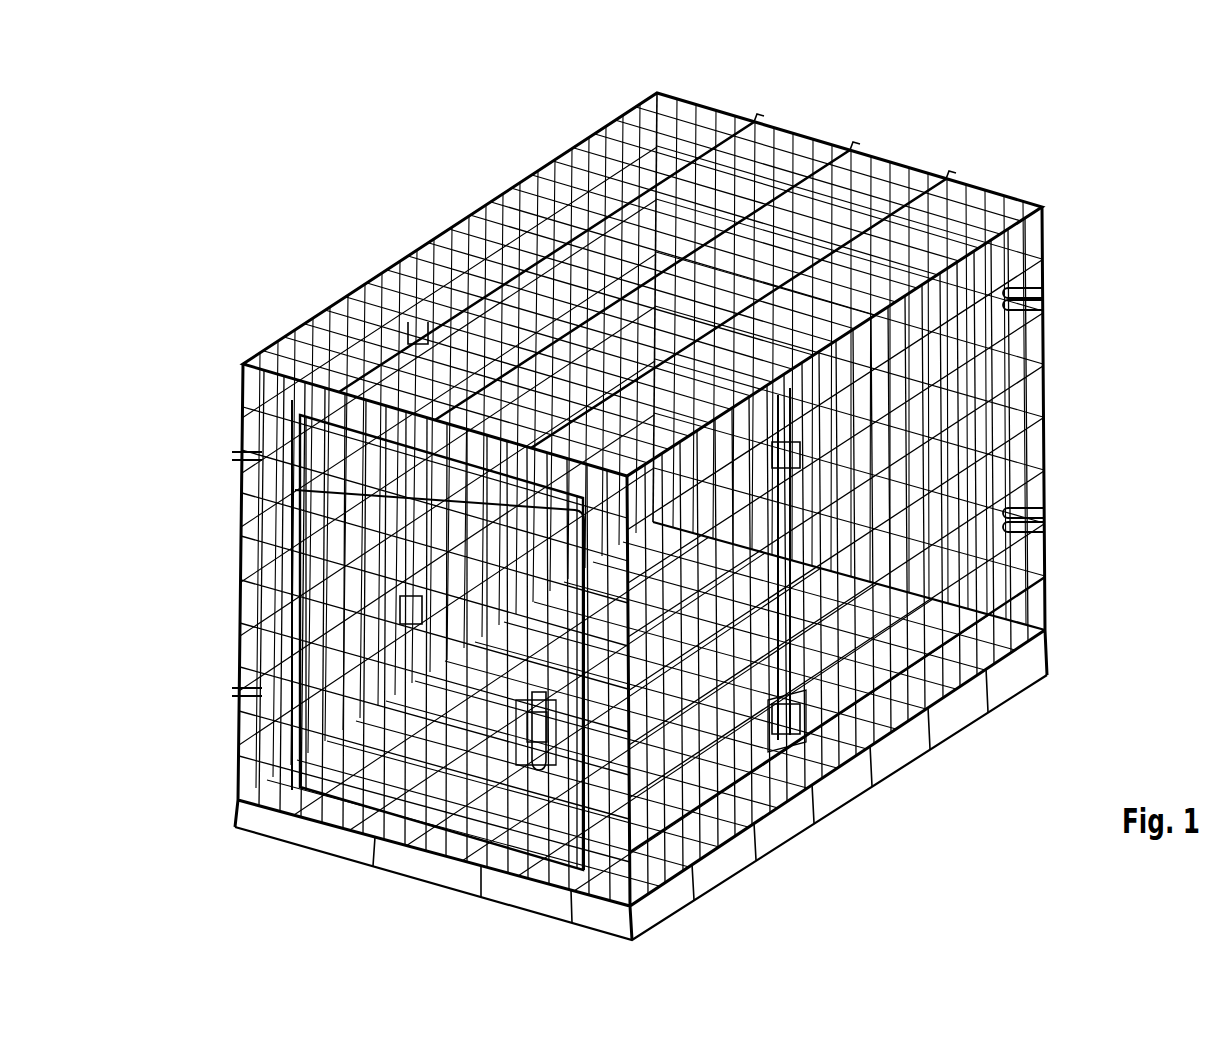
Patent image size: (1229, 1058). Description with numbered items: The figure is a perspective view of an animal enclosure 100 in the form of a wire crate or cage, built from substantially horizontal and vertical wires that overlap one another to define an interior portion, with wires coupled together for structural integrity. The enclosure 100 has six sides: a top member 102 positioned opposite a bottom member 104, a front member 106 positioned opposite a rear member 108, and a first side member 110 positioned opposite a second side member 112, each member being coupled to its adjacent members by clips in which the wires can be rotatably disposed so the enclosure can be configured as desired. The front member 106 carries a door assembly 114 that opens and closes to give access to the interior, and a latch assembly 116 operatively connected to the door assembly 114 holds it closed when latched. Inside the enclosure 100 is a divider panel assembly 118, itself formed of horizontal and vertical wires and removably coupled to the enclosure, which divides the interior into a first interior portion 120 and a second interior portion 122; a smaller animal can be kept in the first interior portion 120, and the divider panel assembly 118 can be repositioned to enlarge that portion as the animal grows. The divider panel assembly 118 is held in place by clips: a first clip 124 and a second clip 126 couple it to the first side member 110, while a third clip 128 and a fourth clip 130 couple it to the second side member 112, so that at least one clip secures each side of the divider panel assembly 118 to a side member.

The animal enclosure 100 is at (220, 147).
The top member 102 is at (900, 200).
The bottom member 104 is at (785, 830).
The front member 106 is at (275, 745).
The rear member 108 is at (1000, 300).
The first side member 110 is at (1020, 602).
The second side member 112 is at (292, 545).
The door assembly 114 is at (425, 795).
The latch assembly 116 is at (542, 780).
The divider panel assembly 118 is at (812, 748).
The first interior portion 120 is at (700, 818).
The second interior portion 122 is at (950, 536).
The first clip 124 is at (796, 727).
The second clip 126 is at (865, 478).
The third clip 128 is at (410, 610).
The fourth clip 130 is at (420, 332).